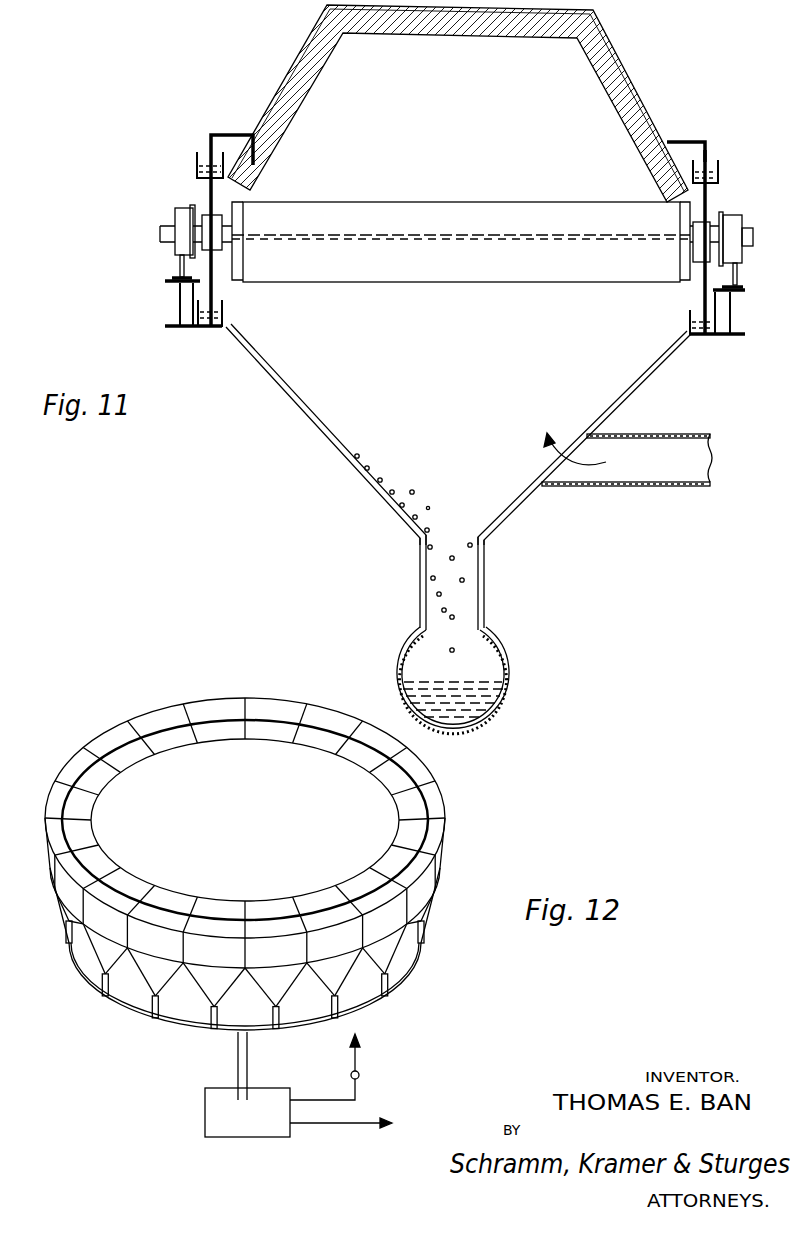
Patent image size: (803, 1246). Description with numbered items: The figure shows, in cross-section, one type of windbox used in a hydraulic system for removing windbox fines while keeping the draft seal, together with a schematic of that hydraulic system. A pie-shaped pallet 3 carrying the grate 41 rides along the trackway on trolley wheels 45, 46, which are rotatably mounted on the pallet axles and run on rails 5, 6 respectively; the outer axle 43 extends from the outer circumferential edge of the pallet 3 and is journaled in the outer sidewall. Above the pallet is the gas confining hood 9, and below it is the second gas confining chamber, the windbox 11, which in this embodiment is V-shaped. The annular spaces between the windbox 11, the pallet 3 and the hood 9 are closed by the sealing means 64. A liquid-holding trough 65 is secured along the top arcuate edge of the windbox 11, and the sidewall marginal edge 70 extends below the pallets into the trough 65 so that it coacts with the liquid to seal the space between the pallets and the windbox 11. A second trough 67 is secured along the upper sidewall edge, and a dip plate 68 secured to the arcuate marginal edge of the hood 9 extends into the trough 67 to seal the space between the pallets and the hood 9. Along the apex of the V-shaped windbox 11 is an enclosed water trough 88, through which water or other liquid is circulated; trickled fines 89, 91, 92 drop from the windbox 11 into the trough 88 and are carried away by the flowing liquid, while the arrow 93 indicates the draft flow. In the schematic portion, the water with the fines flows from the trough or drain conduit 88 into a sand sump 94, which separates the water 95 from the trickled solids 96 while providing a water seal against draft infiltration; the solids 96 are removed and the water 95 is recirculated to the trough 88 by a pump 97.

In FIG. 11, the pallet 3 is at (393, 204).
In FIG. 11, the rail 5 is at (739, 279).
In FIG. 11, the rail 6 is at (178, 270).
In FIG. 11, the hood 9 is at (614, 52).
In FIG. 12, the hood 9 is at (433, 813).
In FIG. 11, the windbox 11 is at (650, 381).
In FIG. 12, the windbox 11 is at (357, 968).
In FIG. 11, the grate 41 is at (409, 243).
In FIG. 11, the axle 43 is at (722, 220).
In FIG. 11, the trolley wheel 45 is at (736, 220).
In FIG. 11, the trolley wheel 46 is at (185, 212).
In FIG. 11, the sealing means 64 is at (694, 267).
In FIG. 11, the trough 65 is at (690, 320).
In FIG. 11, the trough 67 is at (718, 170).
In FIG. 11, the dip plate 68 is at (699, 141).
In FIG. 11, the sidewall marginal edge 70 is at (704, 337).
In FIG. 11, the water trough 88 is at (485, 612).
In FIG. 12, the water trough 88 is at (190, 1028).
In FIG. 11, the fines 89 is at (383, 481).
In FIG. 11, the fines 91 is at (369, 465).
In FIG. 11, the fines 92 is at (416, 500).
In FIG. 11, the draft flow arrow 93 is at (627, 459).
In FIG. 12, the sand sump 94 is at (205, 1112).
In FIG. 12, the water 95 is at (323, 1099).
In FIG. 12, the trickled solids 96 is at (355, 1125).
In FIG. 12, the pump 97 is at (361, 1075).